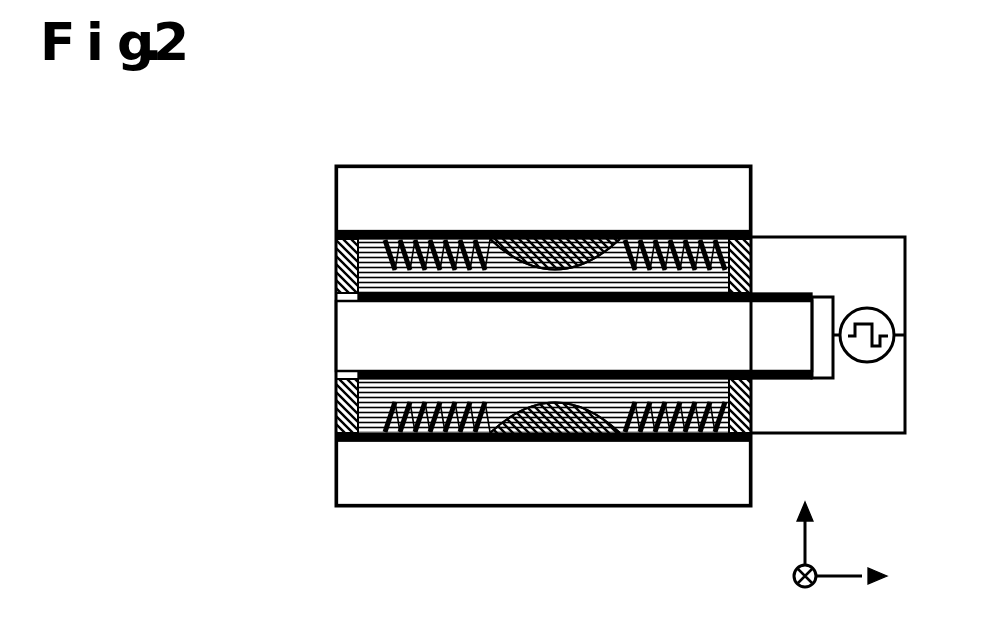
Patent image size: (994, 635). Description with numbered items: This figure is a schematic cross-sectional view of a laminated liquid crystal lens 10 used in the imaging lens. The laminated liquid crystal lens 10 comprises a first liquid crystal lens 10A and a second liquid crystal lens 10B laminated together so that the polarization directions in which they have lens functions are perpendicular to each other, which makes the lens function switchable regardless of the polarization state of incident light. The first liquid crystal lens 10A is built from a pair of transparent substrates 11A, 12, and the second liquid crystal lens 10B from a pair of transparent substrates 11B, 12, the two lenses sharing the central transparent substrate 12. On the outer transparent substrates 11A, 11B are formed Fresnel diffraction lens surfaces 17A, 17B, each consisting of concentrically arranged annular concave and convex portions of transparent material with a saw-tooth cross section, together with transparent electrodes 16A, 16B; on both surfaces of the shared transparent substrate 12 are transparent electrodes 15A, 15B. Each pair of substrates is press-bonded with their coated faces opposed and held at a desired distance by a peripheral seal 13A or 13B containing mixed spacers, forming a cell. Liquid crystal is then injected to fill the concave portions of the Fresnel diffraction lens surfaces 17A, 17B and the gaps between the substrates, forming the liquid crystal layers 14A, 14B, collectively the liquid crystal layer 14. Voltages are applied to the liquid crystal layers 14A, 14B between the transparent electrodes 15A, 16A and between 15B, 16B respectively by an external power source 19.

The laminated liquid crystal lens 10 is at (310, 141).
The first liquid crystal lens 10A is at (258, 160).
The second liquid crystal lens 10B is at (258, 340).
The transparent substrate 11A is at (383, 195).
The transparent substrate 11B is at (383, 483).
The transparent substrate 12 is at (375, 329).
The seal 13A is at (336, 273).
The seal 13B is at (336, 405).
The liquid crystal layer 14 is at (623, 238).
The liquid crystal layer 14A is at (607, 178).
The liquid crystal layer 14B is at (606, 497).
The transparent electrode 15A is at (385, 297).
The transparent electrode 15B is at (336, 373).
The transparent electrode 16A is at (336, 235).
The transparent electrode 16B is at (336, 436).
The Fresnel diffraction lens surface 17A is at (562, 236).
The Fresnel diffraction lens surface 17B is at (553, 438).
The external power source 19 is at (828, 335).